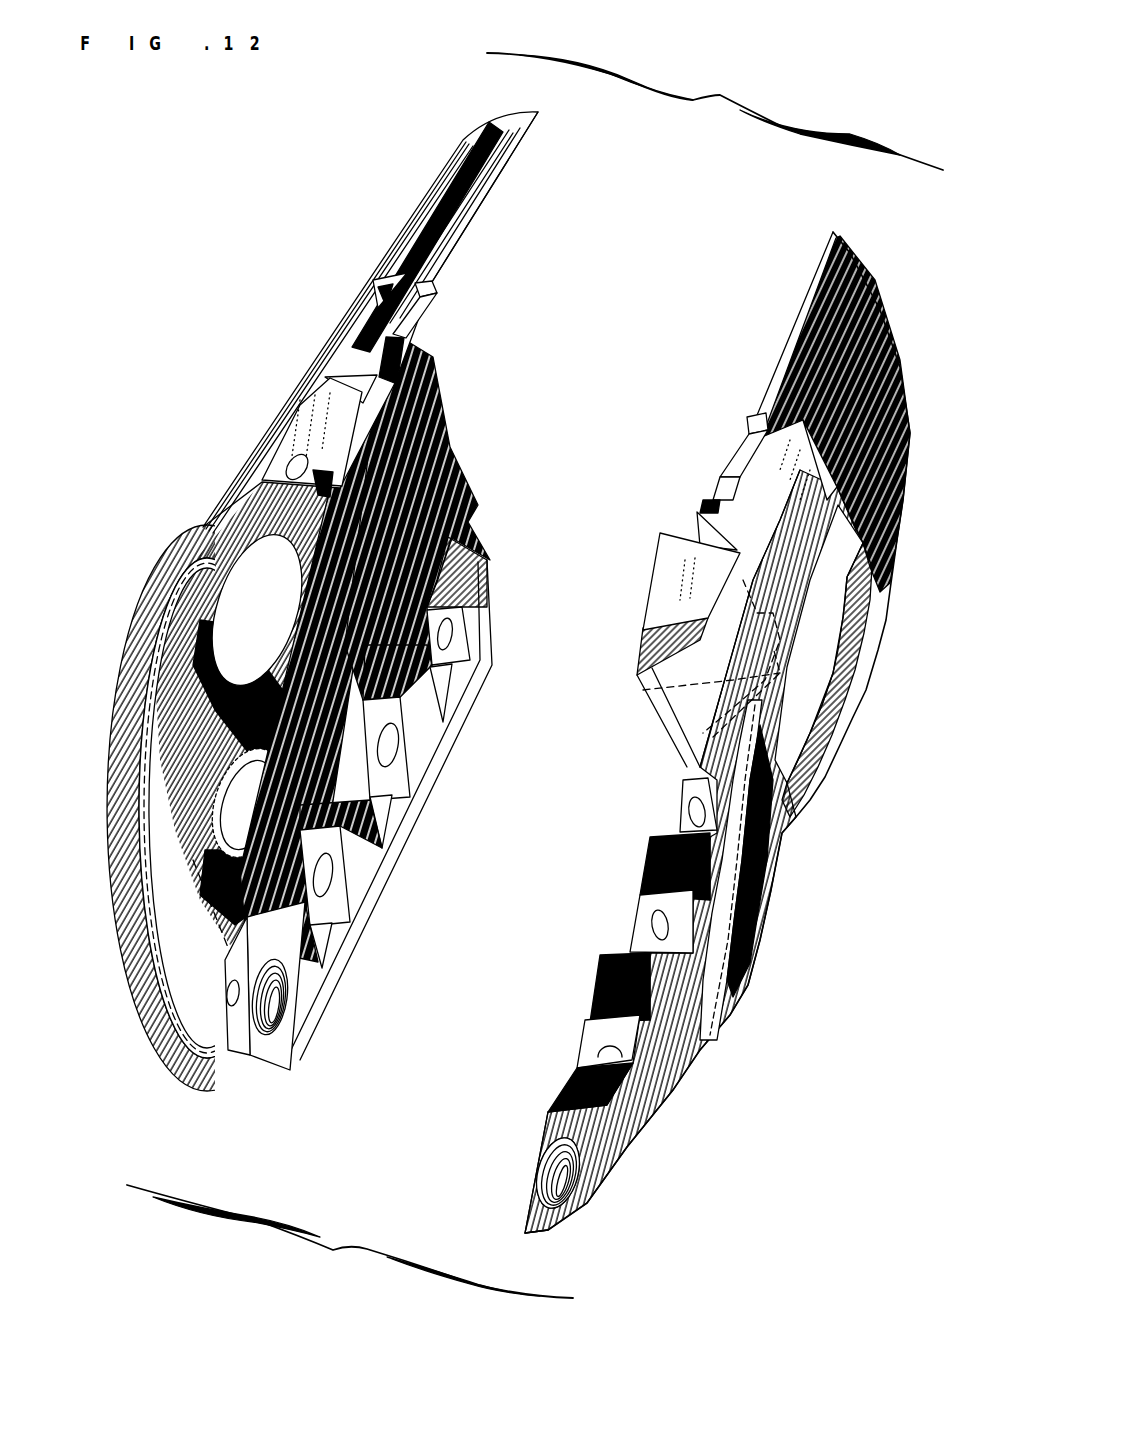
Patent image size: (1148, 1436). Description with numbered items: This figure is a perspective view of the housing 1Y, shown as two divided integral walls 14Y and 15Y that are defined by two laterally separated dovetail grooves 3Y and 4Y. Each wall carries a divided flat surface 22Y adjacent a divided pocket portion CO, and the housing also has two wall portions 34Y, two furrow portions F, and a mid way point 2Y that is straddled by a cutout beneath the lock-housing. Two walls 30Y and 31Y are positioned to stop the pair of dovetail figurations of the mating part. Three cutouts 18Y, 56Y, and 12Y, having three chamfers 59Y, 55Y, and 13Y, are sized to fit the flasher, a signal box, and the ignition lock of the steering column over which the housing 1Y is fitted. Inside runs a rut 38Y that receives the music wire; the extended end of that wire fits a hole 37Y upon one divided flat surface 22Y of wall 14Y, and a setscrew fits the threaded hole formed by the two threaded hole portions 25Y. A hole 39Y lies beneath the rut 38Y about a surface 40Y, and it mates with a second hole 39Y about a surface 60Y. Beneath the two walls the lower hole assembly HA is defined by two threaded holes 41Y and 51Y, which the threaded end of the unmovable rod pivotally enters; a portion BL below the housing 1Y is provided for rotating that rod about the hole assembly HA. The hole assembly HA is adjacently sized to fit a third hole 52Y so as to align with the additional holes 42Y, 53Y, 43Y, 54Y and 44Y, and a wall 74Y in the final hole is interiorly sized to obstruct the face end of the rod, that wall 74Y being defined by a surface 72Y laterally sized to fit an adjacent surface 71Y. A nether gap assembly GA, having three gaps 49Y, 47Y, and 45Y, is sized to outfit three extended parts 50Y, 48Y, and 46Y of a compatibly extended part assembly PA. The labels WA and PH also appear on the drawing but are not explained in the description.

The housing 1Y is at (465, 144).
The mid way point 2Y is at (542, 128).
The dovetail groove 3Y is at (237, 478).
The dovetail groove 4Y is at (797, 473).
The cutout 12Y is at (247, 713).
The chamfer 13Y is at (263, 612).
The divided integral wall 14Y is at (190, 570).
The divided integral wall 15Y is at (682, 1087).
The cutout 18Y is at (250, 775).
The divided flat surface 22Y is at (350, 418).
The threaded hole portion 25Y is at (322, 468).
The wall 30Y is at (380, 280).
The wall 31Y is at (823, 463).
The wall portion 34Y is at (353, 392).
The hole 37Y is at (292, 463).
The rut 38Y is at (170, 823).
The hole 39Y is at (227, 987).
The surface 40Y is at (223, 1073).
The threaded hole 41Y is at (263, 1047).
The hole 42Y is at (323, 872).
The hole 43Y is at (397, 672).
The hole 44Y is at (447, 636).
The gap 45Y is at (443, 681).
The extended part 46Y is at (700, 780).
The gap 47Y is at (387, 803).
The extended part 48Y is at (655, 857).
The gap 49Y is at (323, 920).
The extended part 50Y is at (603, 983).
The threaded hole 51Y is at (567, 1203).
The third hole 52Y is at (613, 1047).
The hole 53Y is at (653, 930).
The hole 54Y is at (700, 810).
The chamfer 55Y is at (790, 832).
The cutout 56Y is at (842, 730).
The chamfer 59Y is at (262, 760).
The surface 60Y is at (530, 1200).
The adjacent surface 71Y is at (470, 540).
The surface 72Y is at (750, 618).
The wall 74Y is at (680, 710).
The wall WA is at (432, 291).
The furrow portion F is at (412, 311).
The pocket portion CO is at (390, 372).
The portion below the housing BL is at (441, 718).
The gap assembly GA is at (323, 933).
The hole assembly HA is at (260, 1047).
The extended part assembly PA is at (597, 1010).
The pivot hole PH is at (727, 687).